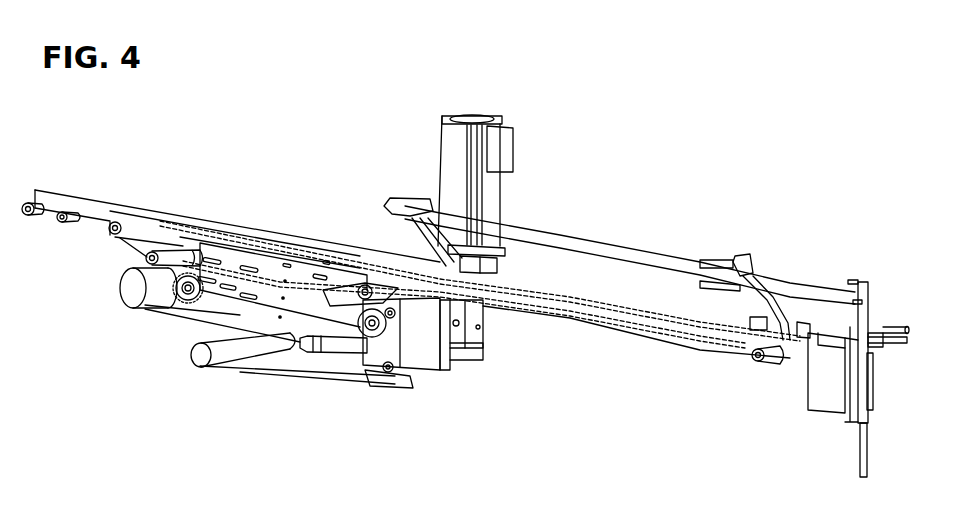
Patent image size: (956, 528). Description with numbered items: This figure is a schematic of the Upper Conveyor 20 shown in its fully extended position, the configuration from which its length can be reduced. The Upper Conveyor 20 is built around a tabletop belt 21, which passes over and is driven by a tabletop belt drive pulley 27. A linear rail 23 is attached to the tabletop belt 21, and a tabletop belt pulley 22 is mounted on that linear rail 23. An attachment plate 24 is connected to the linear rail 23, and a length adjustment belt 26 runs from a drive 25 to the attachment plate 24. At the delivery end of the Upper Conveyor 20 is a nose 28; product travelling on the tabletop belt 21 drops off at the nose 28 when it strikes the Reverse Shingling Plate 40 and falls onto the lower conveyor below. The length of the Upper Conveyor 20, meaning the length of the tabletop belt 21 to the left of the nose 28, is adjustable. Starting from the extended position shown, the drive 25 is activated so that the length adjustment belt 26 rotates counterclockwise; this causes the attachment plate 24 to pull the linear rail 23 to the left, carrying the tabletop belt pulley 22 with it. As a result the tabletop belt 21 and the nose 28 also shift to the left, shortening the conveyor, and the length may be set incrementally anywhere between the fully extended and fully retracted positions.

The Upper Conveyor 20 is at (564, 178).
The tabletop belt 21 is at (496, 300).
The tabletop belt pulley 22 is at (370, 282).
The linear rail 23 is at (225, 242).
The attachment plate 24 is at (402, 391).
The drive 25 is at (440, 152).
The length adjustment belt 26 is at (277, 328).
The tabletop belt drive pulley 27 is at (146, 306).
The nose 28 is at (745, 342).
The Reverse Shingling Plate 40 is at (838, 420).